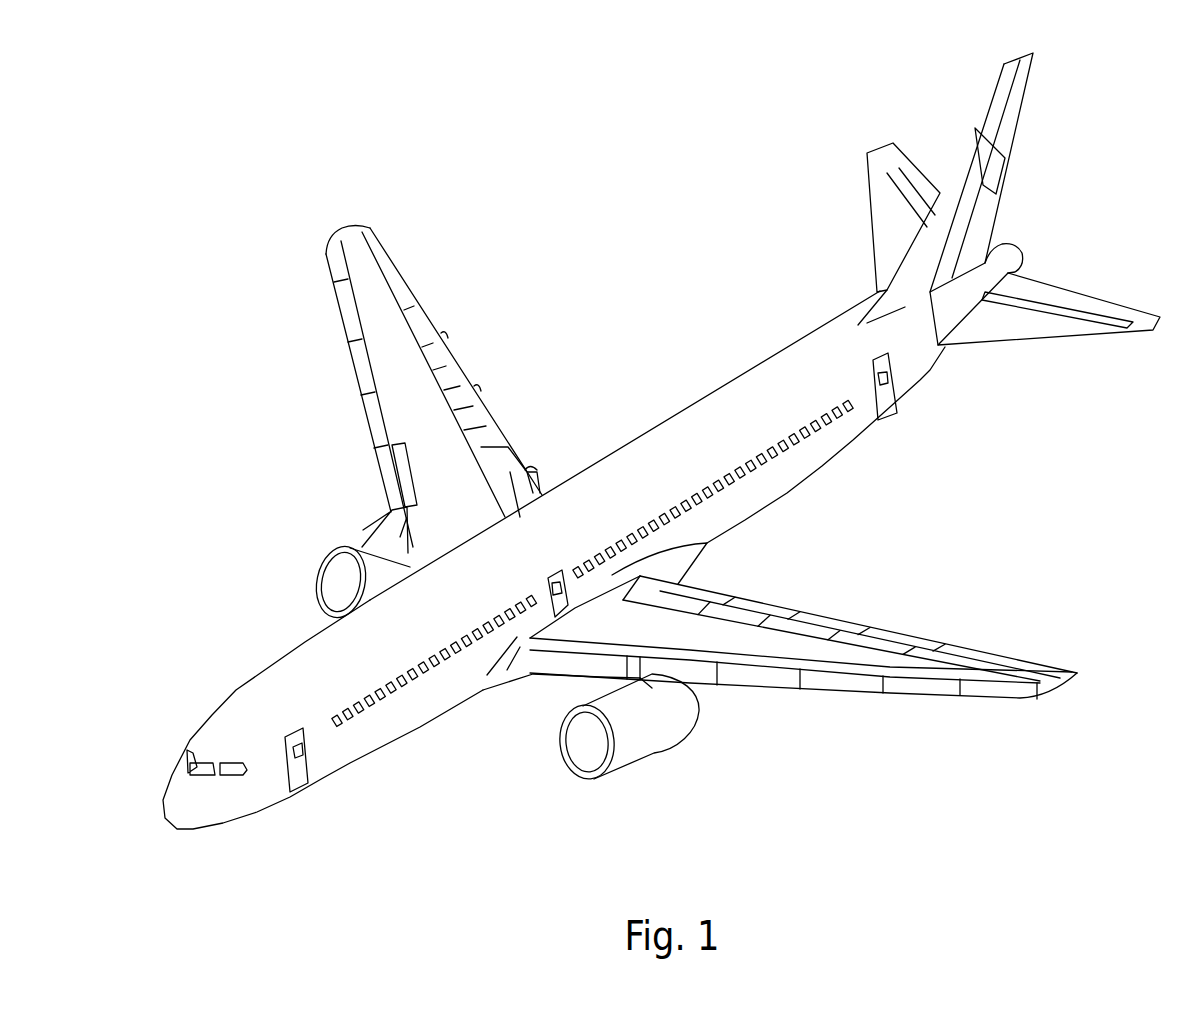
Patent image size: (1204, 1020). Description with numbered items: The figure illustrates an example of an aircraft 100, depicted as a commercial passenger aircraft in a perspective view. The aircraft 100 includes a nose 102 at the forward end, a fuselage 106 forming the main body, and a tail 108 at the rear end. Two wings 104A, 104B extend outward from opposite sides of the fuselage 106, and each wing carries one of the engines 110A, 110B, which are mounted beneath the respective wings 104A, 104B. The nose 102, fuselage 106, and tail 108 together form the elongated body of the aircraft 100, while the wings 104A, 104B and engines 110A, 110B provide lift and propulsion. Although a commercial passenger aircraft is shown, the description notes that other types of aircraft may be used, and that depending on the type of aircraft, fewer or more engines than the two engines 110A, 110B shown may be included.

The aircraft 100 is at (574, 380).
The nose 102 is at (188, 832).
The wing 104A is at (371, 224).
The wing 104B is at (1079, 673).
The fuselage 106 is at (765, 490).
The tail 108 is at (1036, 71).
The engine 110A is at (347, 555).
The engine 110B is at (630, 740).